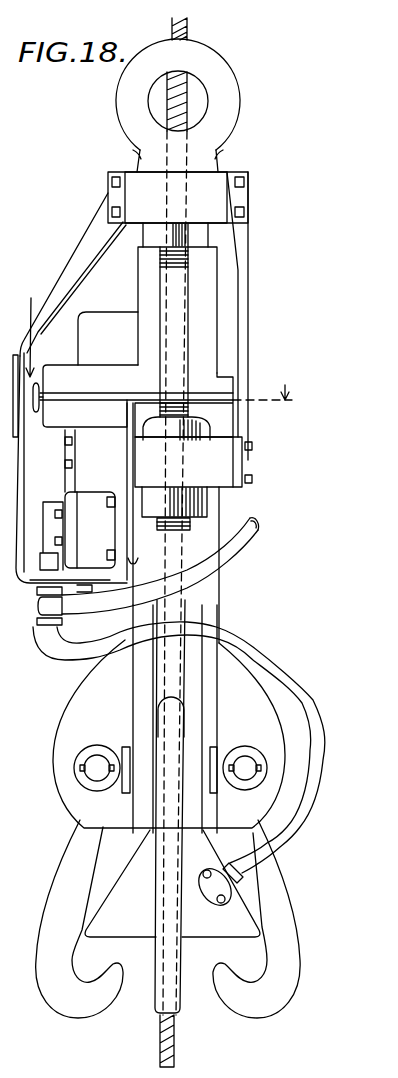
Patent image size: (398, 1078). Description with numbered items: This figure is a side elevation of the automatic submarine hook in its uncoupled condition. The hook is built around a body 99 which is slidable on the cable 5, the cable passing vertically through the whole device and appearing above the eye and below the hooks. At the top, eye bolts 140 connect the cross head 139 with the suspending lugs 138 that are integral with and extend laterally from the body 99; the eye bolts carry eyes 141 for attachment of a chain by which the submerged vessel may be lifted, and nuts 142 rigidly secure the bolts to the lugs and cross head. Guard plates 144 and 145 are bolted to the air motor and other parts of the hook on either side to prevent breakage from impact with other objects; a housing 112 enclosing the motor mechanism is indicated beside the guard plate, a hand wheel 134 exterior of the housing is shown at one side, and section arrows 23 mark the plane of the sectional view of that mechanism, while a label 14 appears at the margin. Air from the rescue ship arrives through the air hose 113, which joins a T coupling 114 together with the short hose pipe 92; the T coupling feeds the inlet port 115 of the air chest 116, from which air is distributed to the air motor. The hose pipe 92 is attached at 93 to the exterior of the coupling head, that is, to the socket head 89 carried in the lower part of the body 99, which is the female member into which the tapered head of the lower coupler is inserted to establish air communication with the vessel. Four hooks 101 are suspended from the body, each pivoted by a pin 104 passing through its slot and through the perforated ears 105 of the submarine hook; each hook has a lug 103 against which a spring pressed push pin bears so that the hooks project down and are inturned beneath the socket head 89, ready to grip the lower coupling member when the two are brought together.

The cable 5 is at (160, 1030).
The frame 14 is at (377, 424).
The section line 23 is at (160, 336).
The socket head 89 is at (146, 806).
The hose pipe 92 is at (311, 705).
The hose attachment 93 is at (247, 907).
The body of the automatic submarine hook 99 is at (220, 580).
The hooks 101 is at (72, 860).
The lug 103 is at (175, 718).
The pins 104 is at (95, 768).
The perforated ears 105 is at (107, 662).
The housing 112 is at (128, 311).
The air hose 113 is at (258, 524).
The T coupling 114 is at (27, 632).
The inlet port 115 is at (53, 532).
The air chest 116 is at (90, 499).
The hand wheel 134 is at (38, 381).
The suspending lugs 138 is at (227, 463).
The cross head 139 is at (215, 199).
The eye bolts 140 is at (180, 318).
The eyes 141 is at (218, 107).
The nuts 142 is at (207, 498).
The guard plate 144 is at (72, 263).
The guard plate 145 is at (248, 272).